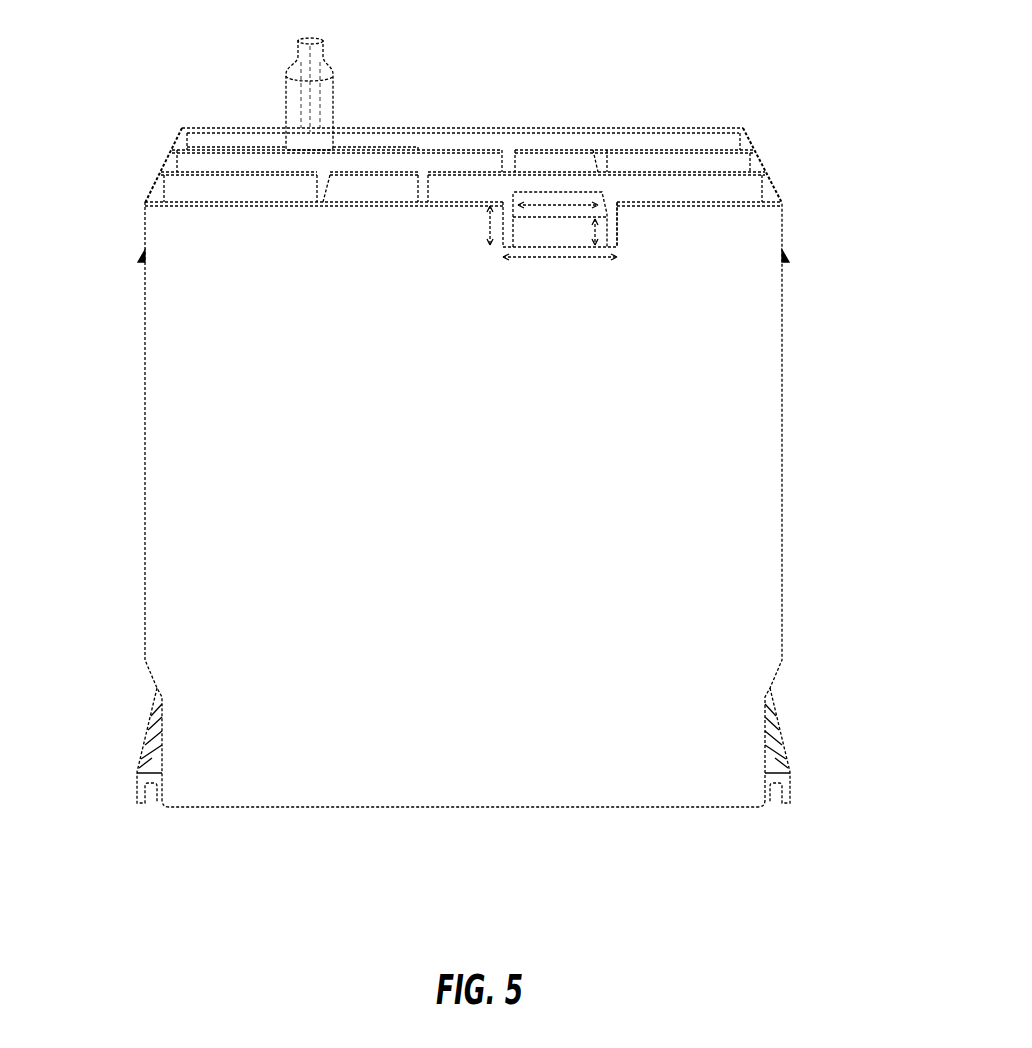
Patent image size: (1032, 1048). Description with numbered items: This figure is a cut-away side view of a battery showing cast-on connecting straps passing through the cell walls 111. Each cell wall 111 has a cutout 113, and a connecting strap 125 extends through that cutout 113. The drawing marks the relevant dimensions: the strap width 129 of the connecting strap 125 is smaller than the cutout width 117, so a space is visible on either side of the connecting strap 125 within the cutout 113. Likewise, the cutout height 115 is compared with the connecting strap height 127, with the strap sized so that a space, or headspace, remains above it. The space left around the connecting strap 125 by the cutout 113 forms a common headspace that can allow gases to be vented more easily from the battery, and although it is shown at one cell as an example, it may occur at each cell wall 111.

The cell wall 111 is at (700, 190).
The cutout 113 is at (318, 198).
The cutout height 115 is at (488, 225).
The cutout width 117 is at (565, 258).
The connecting strap 125 is at (533, 146).
The connecting strap height 127 is at (600, 233).
The strap width 129 is at (568, 205).